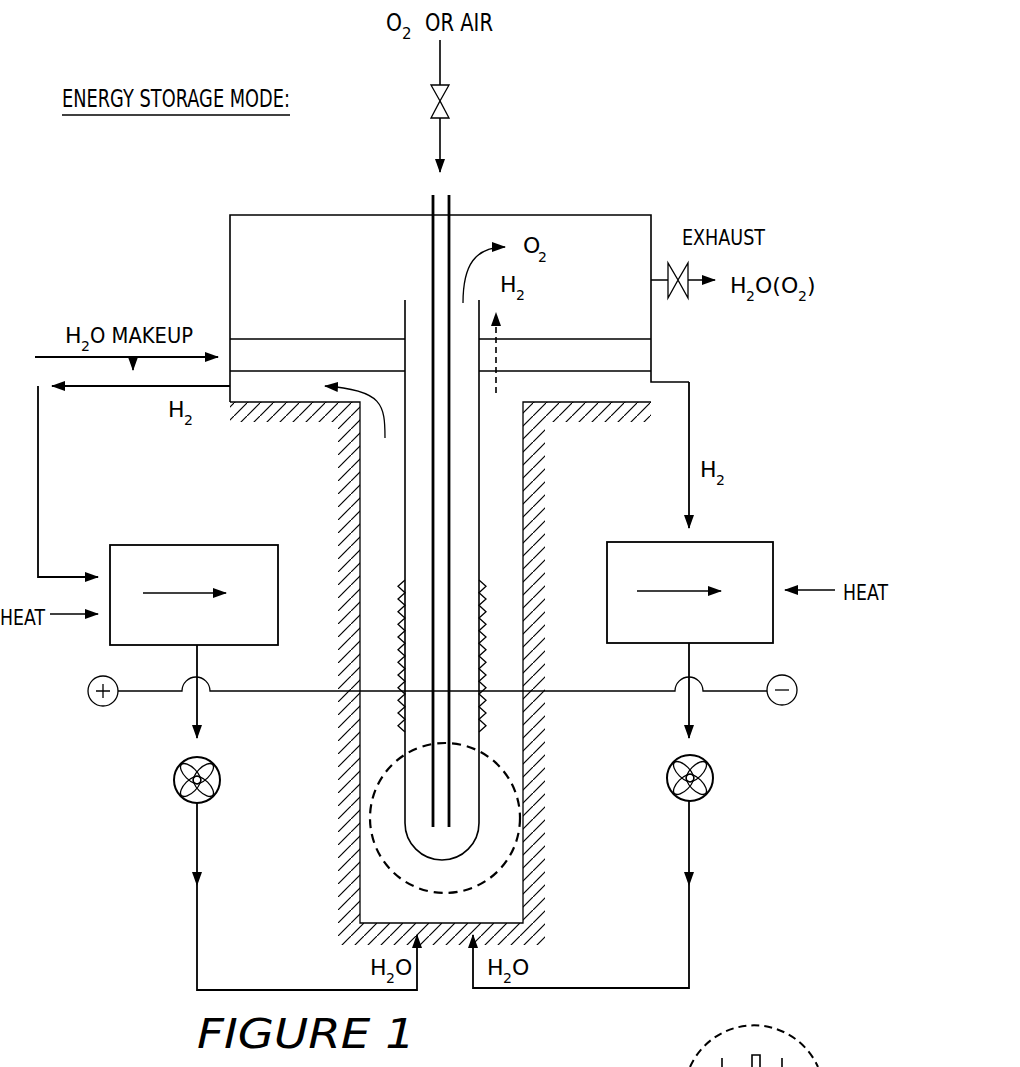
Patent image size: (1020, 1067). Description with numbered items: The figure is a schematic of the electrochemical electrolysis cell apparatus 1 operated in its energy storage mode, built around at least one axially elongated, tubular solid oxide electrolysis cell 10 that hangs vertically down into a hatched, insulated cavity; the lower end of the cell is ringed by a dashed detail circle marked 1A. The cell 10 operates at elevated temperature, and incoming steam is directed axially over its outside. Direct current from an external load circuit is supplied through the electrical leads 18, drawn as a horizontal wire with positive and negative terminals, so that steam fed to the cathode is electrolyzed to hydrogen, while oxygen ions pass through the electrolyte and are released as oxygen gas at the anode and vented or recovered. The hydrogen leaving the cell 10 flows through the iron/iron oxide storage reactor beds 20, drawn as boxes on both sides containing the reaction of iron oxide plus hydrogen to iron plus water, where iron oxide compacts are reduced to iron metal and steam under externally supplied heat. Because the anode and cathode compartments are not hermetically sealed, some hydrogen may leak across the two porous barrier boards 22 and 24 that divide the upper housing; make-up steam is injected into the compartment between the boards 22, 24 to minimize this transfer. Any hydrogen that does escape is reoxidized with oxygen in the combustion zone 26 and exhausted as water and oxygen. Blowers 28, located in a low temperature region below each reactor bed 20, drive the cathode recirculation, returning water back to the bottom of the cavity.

The electrochemical electrolysis cell apparatus 1 is at (160, 1015).
The detail region of electrolyte tube bottom 1A is at (512, 782).
The tubular electrochemical electrolysis cell 10 is at (395, 812).
The electrical leads 18 is at (737, 692).
The iron/iron oxide storage reactor bed 20 is at (107, 637).
The porous barrier board 22 is at (620, 371).
The porous barrier board 24 is at (620, 339).
The combustion zone 26 is at (230, 228).
The blowers 28 is at (173, 792).